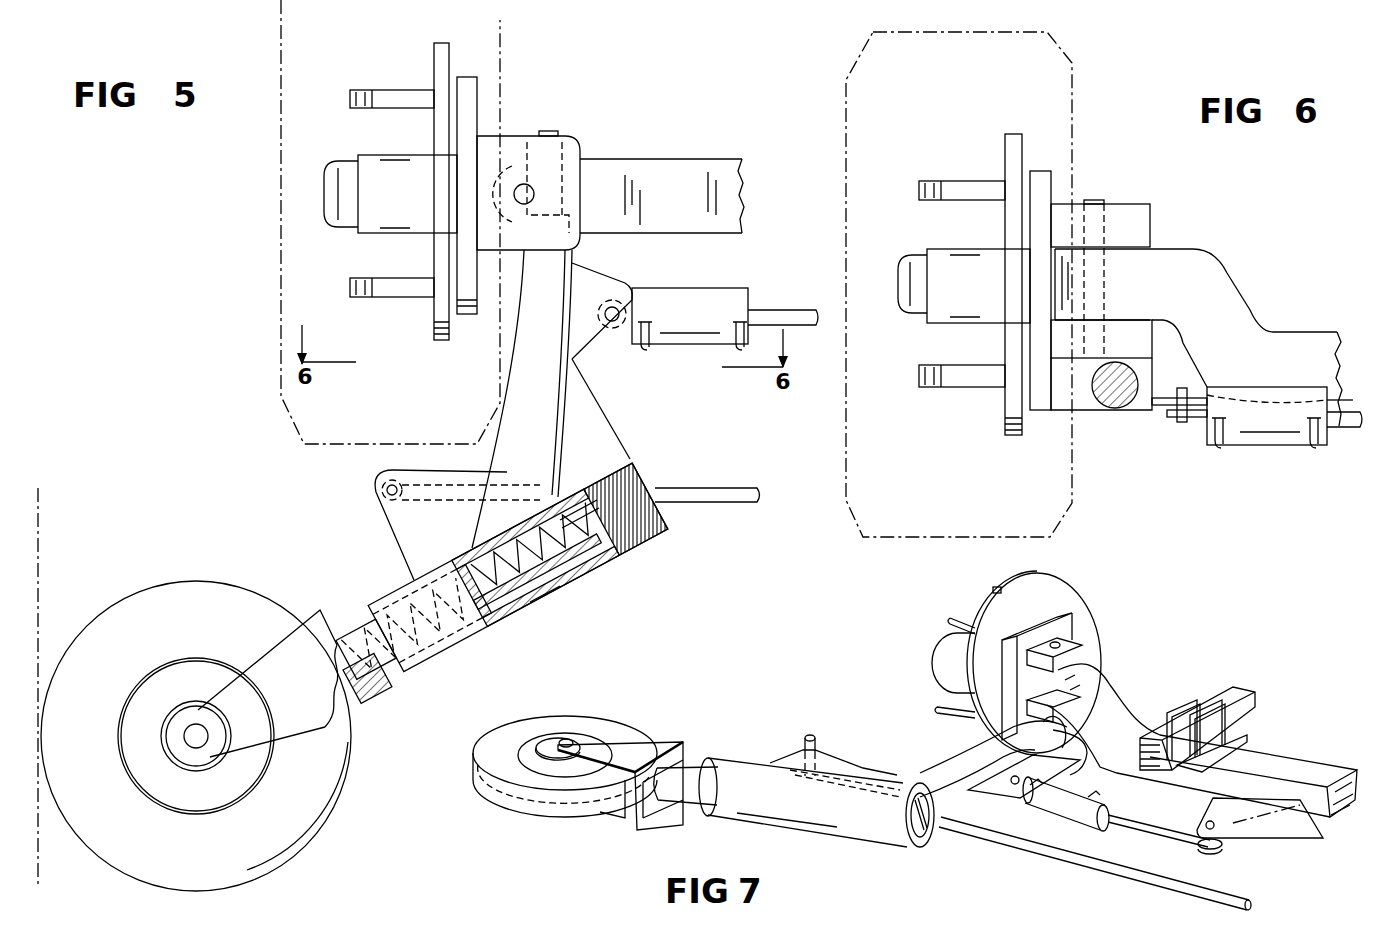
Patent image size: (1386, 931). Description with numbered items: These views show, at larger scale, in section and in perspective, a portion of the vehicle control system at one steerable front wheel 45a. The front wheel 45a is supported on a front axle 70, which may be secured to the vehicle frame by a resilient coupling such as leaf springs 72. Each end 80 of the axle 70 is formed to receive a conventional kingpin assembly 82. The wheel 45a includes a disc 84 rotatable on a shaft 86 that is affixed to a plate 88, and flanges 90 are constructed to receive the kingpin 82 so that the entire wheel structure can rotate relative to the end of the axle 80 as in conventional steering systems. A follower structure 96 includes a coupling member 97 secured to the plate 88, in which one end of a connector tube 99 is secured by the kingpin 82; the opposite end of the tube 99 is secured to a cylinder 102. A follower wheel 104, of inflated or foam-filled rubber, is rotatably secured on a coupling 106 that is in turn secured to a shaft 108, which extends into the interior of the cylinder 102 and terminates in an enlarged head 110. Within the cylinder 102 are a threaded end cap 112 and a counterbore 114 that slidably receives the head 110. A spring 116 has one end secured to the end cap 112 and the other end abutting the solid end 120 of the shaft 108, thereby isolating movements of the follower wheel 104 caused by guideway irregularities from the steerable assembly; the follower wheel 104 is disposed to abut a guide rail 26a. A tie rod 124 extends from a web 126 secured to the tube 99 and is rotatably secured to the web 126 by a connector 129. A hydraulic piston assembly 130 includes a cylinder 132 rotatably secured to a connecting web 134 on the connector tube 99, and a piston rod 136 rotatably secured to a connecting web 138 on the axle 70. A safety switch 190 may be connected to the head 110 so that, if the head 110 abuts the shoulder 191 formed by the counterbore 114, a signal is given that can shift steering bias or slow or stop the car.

In FIG. 5, the frame member 26a is at (38, 503).
In FIG. 5, the front wheel 45a is at (281, 165).
In FIG. 6, the front wheel 45a is at (846, 80).
In FIG. 5, the front axle 70 is at (683, 161).
In FIG. 6, the front axle 70 is at (1218, 266).
In FIG. 7, the front axle 70 is at (1285, 757).
In FIG. 7, the leaf springs 72 is at (1255, 703).
In FIG. 5, the end of axle 80 is at (576, 130).
In FIG. 6, the end of axle 80 is at (1173, 190).
In FIG. 7, the end of axle 80 is at (1152, 643).
In FIG. 5, the kingpin assembly 82 is at (528, 194).
In FIG. 6, the kingpin assembly 82 is at (1104, 200).
In FIG. 7, the kingpin assembly 82 is at (1060, 645).
In FIG. 5, the disc 84 is at (440, 58).
In FIG. 6, the disc 84 is at (1005, 134).
In FIG. 7, the disc 84 is at (1073, 580).
In FIG. 5, the shaft 86 is at (453, 172).
In FIG. 6, the shaft 86 is at (1028, 268).
In FIG. 5, the plate 88 is at (473, 321).
In FIG. 6, the plate 88 is at (1040, 402).
In FIG. 7, the plate 88 is at (1075, 622).
In FIG. 5, the flanges 90 is at (511, 146).
In FIG. 6, the flanges 90 is at (1152, 220).
In FIG. 7, the flanges 90 is at (1075, 656).
In FIG. 5, the follower structure 96 is at (274, 565).
In FIG. 7, the follower structure 96 is at (746, 725).
In FIG. 6, the coupling member 97 is at (1078, 404).
In FIG. 7, the coupling member 97 is at (1073, 748).
In FIG. 5, the connector tube 99 is at (531, 362).
In FIG. 6, the connector tube 99 is at (1117, 408).
In FIG. 7, the connector tube 99 is at (975, 760).
In FIG. 5, the cylinder 102 is at (455, 648).
In FIG. 7, the cylinder 102 is at (776, 825).
In FIG. 5, the follower wheel 104 is at (136, 598).
In FIG. 7, the follower wheel 104 is at (523, 811).
In FIG. 5, the coupling 106 is at (292, 713).
In FIG. 7, the coupling 106 is at (625, 745).
In FIG. 5, the shaft 108 is at (370, 626).
In FIG. 7, the shaft 108 is at (681, 795).
In FIG. 5, the enlarged head 110 is at (583, 587).
In FIG. 5, the threaded end cap 112 is at (663, 512).
In FIG. 7, the threaded end cap 112 is at (919, 848).
In FIG. 5, the counterbore 114 is at (597, 558).
In FIG. 5, the spring 116 is at (572, 520).
In FIG. 5, the solid end of shaft 120 is at (394, 672).
In FIG. 5, the tie rod 124 is at (748, 488).
In FIG. 7, the tie rod 124 is at (1243, 893).
In FIG. 5, the web 126 is at (404, 520).
In FIG. 7, the web 126 is at (847, 757).
In FIG. 5, the connector 129 is at (400, 491).
In FIG. 7, the connector 129 is at (807, 736).
In FIG. 5, the hydraulic piston assembly 130 is at (690, 348).
In FIG. 6, the hydraulic piston assembly 130 is at (1259, 449).
In FIG. 7, the hydraulic piston assembly 130 is at (1073, 832).
In FIG. 5, the cylinder 132 is at (703, 286).
In FIG. 6, the cylinder 132 is at (1283, 393).
In FIG. 7, the cylinder 132 is at (1117, 805).
In FIG. 5, the connecting web 134 is at (599, 338).
In FIG. 6, the connecting web 134 is at (1160, 422).
In FIG. 7, the connecting web 134 is at (1000, 792).
In FIG. 5, the piston rod 136 is at (774, 306).
In FIG. 6, the piston rod 136 is at (1342, 428).
In FIG. 7, the piston rod 136 is at (1175, 840).
In FIG. 7, the connecting web 138 is at (1258, 825).
In FIG. 5, the safety switch 190 is at (535, 600).
In FIG. 5, the shoulder 191 is at (530, 608).